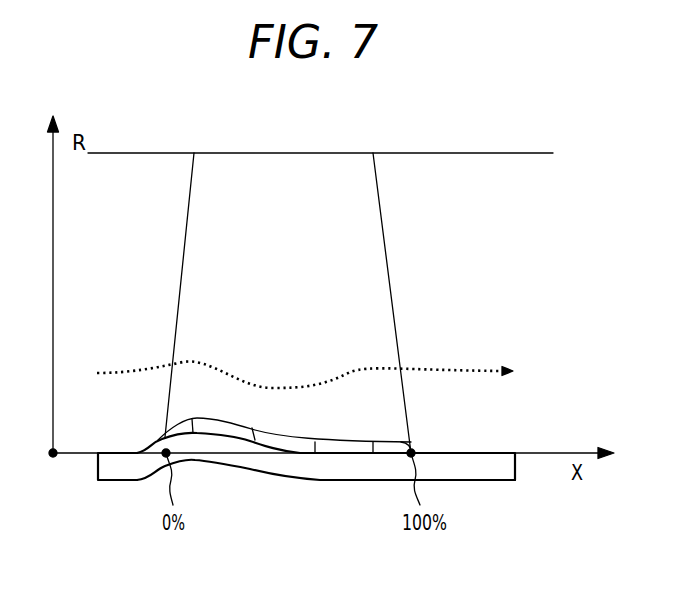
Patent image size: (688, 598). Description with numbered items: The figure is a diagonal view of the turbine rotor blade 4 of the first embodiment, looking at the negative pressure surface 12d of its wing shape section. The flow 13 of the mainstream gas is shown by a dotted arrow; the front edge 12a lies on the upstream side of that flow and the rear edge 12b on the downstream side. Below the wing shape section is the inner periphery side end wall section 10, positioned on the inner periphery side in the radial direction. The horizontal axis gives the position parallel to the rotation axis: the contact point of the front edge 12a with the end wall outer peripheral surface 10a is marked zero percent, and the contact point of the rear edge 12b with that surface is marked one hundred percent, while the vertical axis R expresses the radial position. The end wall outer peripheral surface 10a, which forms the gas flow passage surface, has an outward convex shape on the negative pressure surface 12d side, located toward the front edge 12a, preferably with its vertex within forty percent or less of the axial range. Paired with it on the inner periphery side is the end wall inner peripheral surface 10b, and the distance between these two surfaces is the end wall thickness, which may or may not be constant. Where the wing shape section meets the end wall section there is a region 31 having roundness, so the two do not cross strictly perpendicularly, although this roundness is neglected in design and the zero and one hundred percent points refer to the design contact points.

The turbine rotor blade 4 is at (320, 303).
The inner periphery side end wall section 10 is at (294, 472).
The end wall section outer peripheral surface 10a is at (122, 453).
The end wall section inner peripheral surface 10b is at (300, 480).
The front edge 12a is at (165, 295).
The rear edge 12b is at (440, 235).
The negative pressure surface 12d is at (315, 254).
The flow of the mainstream gas 13 is at (305, 368).
The region having roundness (R) 31 is at (390, 440).